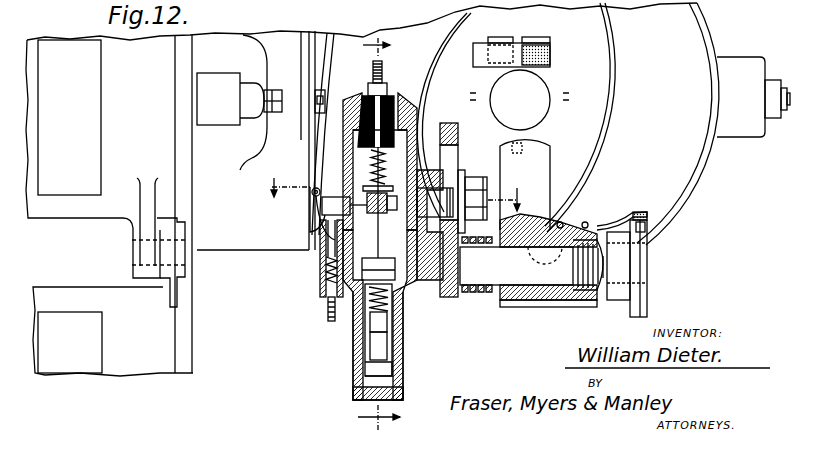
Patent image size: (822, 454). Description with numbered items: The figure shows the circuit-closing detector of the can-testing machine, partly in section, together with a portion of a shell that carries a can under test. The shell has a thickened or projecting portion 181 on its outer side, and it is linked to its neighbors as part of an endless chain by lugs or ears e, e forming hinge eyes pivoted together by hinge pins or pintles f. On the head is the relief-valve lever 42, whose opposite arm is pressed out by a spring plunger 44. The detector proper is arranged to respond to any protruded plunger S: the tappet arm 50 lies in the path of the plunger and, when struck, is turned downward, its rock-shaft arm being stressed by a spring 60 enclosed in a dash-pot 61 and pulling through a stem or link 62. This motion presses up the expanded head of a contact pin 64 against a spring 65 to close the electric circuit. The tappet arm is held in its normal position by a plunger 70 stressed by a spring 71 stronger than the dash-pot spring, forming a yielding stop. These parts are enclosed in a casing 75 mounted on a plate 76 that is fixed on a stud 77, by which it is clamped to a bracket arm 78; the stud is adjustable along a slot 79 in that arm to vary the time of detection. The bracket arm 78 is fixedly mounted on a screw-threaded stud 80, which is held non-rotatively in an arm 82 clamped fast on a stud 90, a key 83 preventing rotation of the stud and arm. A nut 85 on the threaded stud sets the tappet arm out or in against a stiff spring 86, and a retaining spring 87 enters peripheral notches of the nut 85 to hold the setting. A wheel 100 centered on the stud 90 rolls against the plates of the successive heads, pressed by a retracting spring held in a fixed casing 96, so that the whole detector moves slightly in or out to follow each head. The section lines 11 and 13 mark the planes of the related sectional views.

The thickened or projecting portion 181 is at (170, 203).
The lever 42 is at (273, 98).
The spring plunger 44 is at (252, 106).
The plunger S is at (324, 100).
The section line 13- 13 is at (379, 224).
The section line 11- 11 is at (393, 195).
The contact pin 64 is at (384, 75).
The casing 75 is at (342, 138).
The plate 76 is at (411, 113).
The spring 65 is at (384, 160).
The stem or link 62 is at (382, 241).
The spring 60 is at (389, 302).
The dash-pot 61 is at (368, 336).
The plunger 70 is at (327, 207).
The tappet arm 50 is at (330, 187).
The spring 71 is at (322, 272).
The stud 77 is at (452, 201).
The slot 79 is at (452, 158).
The bracket arm 78 is at (450, 300).
The arm 82 is at (548, 168).
The stud 90 is at (520, 100).
The stud 80 is at (516, 266).
The key 83 is at (538, 266).
The stiff spring 86 is at (465, 292).
The nut 85 is at (617, 292).
The retaining spring 87 is at (637, 203).
The fixed casing 96 is at (753, 97).
The wheel 100 is at (703, 160).
The lugs or ears e is at (133, 237).
The hinge pins or pintles f is at (182, 260).